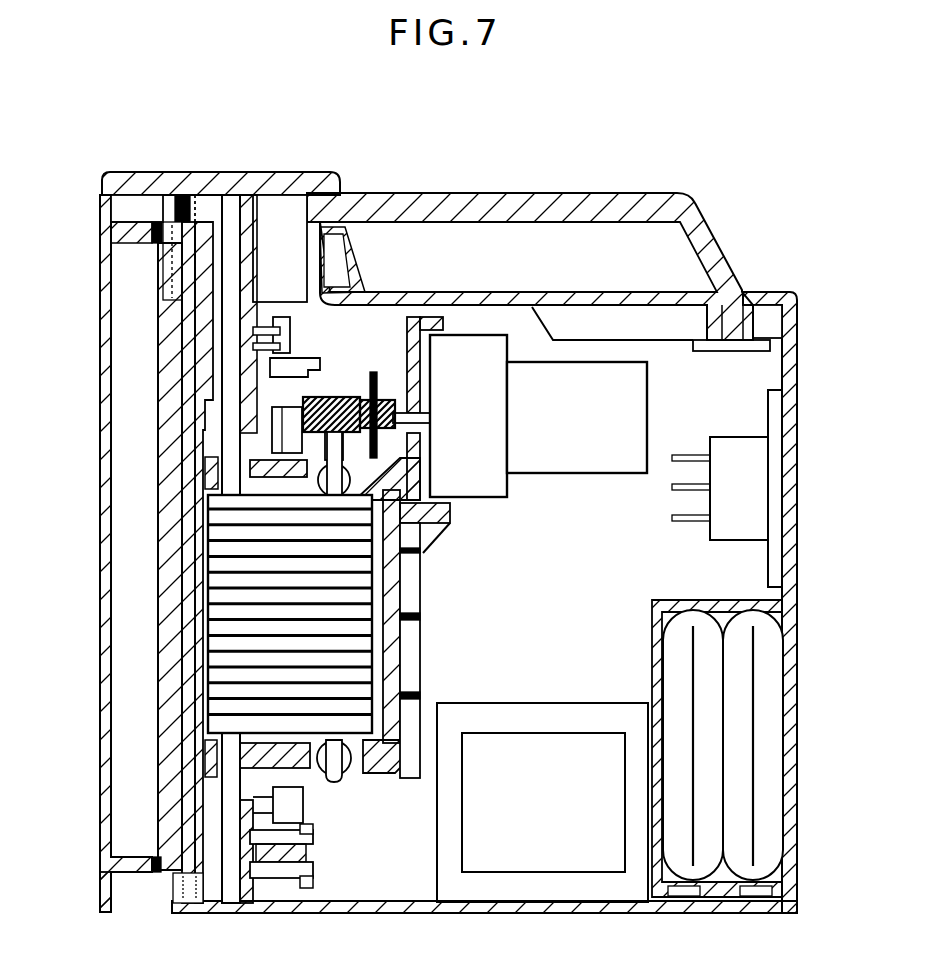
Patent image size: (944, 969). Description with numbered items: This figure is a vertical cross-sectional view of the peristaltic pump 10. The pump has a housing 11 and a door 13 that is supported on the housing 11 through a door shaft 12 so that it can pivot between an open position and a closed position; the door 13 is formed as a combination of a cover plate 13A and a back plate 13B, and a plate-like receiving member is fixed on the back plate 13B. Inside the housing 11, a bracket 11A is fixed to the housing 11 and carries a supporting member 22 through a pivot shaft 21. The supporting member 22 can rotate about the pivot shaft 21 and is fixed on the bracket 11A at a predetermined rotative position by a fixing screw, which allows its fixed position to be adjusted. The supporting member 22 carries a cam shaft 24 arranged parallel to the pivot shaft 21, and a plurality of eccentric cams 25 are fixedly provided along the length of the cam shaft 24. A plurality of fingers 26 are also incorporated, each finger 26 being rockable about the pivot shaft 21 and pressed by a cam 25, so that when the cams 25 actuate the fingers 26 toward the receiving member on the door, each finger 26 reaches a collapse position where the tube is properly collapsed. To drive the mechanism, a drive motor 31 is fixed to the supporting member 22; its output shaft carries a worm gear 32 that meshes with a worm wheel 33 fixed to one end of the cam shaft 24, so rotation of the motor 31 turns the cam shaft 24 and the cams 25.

The peristaltic pump 10 is at (799, 691).
The housing 11 is at (597, 205).
The bracket 11A is at (243, 200).
The door shaft 12 is at (187, 200).
The door 13 is at (100, 818).
The cover plate 13A is at (103, 892).
The back plate 13B is at (161, 872).
The pivot shaft 21 is at (205, 302).
The supporting member 22 is at (407, 767).
The cam shaft 24 is at (336, 783).
The cam 25 is at (363, 645).
The finger 26 is at (215, 640).
The drive motor 31 is at (581, 463).
The worm gear 32 is at (389, 398).
The worm wheel 33 is at (350, 397).